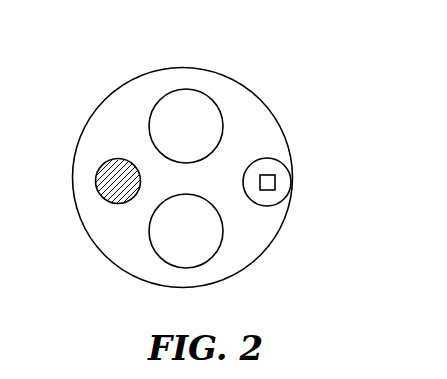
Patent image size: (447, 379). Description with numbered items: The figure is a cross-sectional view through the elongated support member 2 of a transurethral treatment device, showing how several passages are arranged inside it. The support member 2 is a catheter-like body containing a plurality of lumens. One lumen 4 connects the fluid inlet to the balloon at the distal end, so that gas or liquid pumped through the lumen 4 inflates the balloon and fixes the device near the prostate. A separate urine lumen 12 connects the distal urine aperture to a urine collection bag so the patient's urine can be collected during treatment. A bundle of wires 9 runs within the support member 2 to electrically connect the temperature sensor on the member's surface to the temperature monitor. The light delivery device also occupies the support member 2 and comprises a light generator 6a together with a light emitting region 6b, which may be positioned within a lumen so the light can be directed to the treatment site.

The elongated support member 2 is at (165, 69).
The lumen 4 is at (207, 121).
The urine lumen 12 is at (205, 243).
The wires 9 is at (95, 182).
The light generator 6a is at (268, 175).
The light emitting region 6b is at (275, 185).